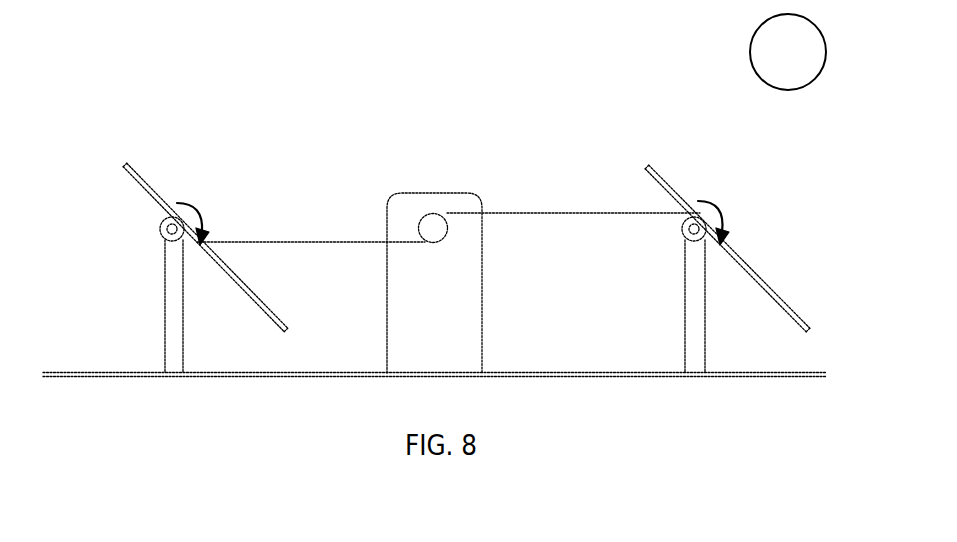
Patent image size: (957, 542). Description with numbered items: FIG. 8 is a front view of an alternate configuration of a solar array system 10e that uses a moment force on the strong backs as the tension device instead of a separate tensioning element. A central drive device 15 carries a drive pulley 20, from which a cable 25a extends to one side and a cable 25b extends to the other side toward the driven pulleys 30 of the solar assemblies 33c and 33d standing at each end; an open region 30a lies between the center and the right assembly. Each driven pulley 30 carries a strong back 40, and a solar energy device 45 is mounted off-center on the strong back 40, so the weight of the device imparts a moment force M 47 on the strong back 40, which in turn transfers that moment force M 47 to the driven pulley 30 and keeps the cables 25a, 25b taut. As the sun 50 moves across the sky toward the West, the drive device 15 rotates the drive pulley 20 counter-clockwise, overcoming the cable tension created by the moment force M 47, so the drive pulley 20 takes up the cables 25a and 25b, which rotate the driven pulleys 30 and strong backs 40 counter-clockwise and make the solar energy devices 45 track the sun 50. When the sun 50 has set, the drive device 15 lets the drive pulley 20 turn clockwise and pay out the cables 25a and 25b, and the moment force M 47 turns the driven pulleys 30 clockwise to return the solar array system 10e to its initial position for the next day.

The solar array system 10e is at (496, 124).
The drive device 15 is at (433, 192).
The drive pulley 20 is at (452, 232).
The cable 25a is at (552, 213).
The cable 25b is at (353, 240).
The driven pulley 30 is at (185, 237).
The post region 30a is at (582, 276).
The right post assembly 33c is at (668, 257).
The left post assembly 33d is at (153, 255).
The strong back 40 is at (180, 222).
The solar energy device 45 is at (148, 182).
The moment force M 47 is at (748, 200).
The sun 50 is at (768, 87).